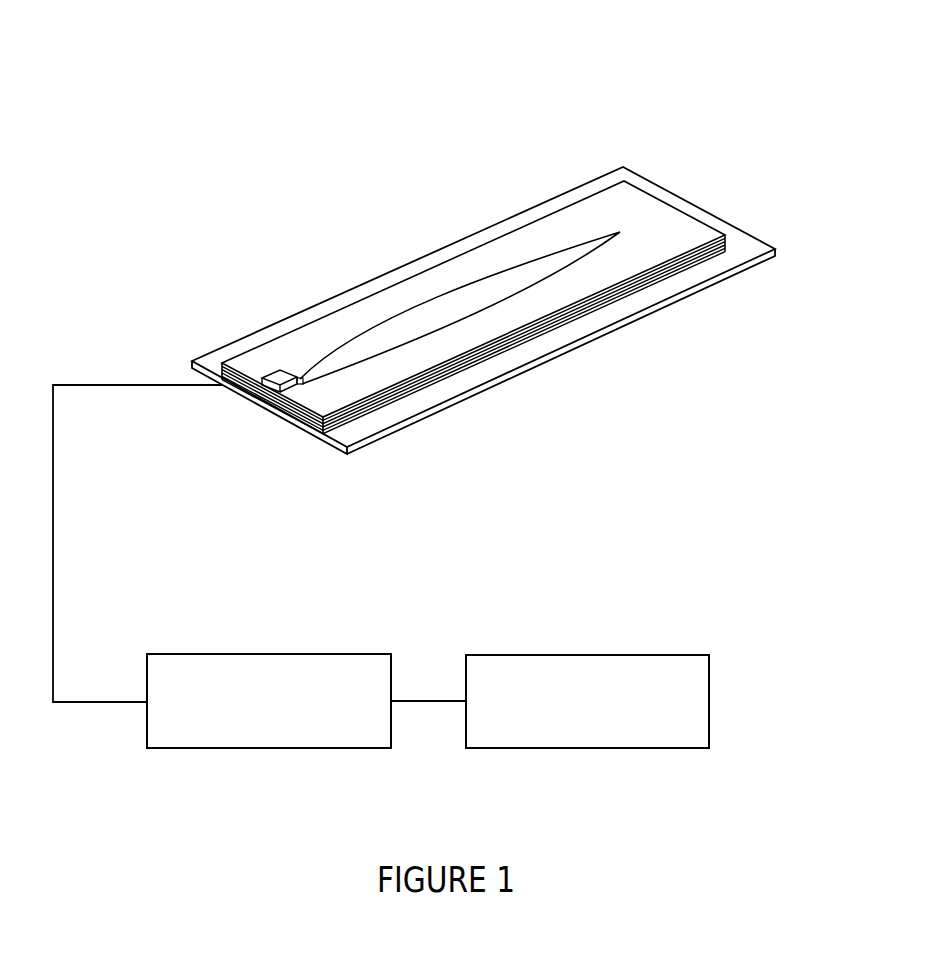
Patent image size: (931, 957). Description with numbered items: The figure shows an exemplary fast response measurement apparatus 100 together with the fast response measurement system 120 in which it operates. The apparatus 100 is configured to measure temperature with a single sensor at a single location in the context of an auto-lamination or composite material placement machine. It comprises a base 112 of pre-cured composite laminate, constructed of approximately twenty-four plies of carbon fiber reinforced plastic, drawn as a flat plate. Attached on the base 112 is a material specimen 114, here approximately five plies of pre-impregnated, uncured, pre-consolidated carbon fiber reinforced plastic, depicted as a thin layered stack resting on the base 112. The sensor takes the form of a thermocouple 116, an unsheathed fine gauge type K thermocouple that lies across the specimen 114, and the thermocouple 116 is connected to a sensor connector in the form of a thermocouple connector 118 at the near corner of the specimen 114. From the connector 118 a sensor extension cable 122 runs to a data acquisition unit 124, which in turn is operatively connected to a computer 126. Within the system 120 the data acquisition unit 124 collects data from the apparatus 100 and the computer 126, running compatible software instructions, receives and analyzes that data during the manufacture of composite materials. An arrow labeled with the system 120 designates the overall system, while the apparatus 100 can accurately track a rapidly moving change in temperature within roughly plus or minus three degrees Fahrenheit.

The fast response measurement apparatus 100 is at (508, 82).
The base 112 is at (673, 193).
The material specimen 114 is at (665, 277).
The thermocouple 116 is at (535, 283).
The thermocouple connector 118 is at (280, 369).
The fast response measurement system 120 is at (752, 533).
The sensor extension cable 122 is at (53, 570).
The data acquisition unit 124 is at (272, 654).
The computer 126 is at (545, 655).